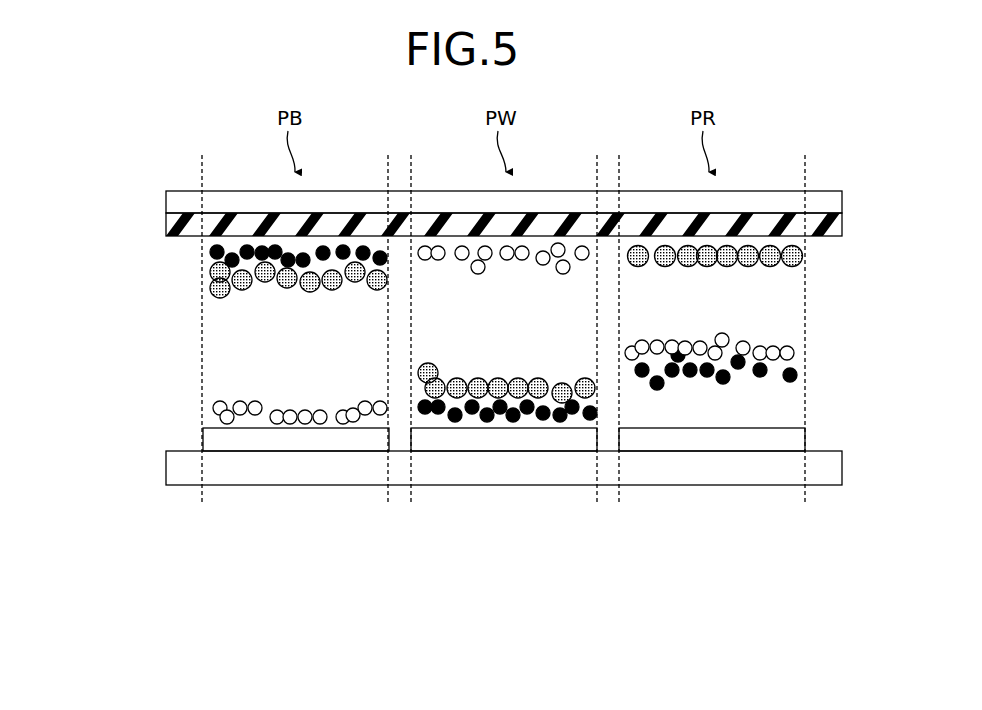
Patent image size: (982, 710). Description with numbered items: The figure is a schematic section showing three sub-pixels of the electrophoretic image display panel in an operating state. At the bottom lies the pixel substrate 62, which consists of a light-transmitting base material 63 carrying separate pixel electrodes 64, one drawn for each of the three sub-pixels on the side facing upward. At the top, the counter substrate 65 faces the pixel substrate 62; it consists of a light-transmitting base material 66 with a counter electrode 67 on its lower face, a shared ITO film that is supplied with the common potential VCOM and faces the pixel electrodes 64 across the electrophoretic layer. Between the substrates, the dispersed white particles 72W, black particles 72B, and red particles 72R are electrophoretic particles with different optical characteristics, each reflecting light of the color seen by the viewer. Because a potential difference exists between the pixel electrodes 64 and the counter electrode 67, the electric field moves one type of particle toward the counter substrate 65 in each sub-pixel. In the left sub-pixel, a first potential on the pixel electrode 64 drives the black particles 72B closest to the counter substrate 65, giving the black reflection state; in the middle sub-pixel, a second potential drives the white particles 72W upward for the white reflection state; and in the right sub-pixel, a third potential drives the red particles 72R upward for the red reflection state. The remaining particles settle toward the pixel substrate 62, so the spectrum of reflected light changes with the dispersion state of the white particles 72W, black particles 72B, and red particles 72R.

The pixel substrate 62 is at (97, 420).
The base material 63 is at (166, 466).
The pixel electrodes 64 is at (203, 432).
The counter substrate 65 is at (97, 180).
The base material 66 is at (166, 201).
The counter electrode 67 is at (166, 228).
The black particles 72B is at (212, 253).
The red particles 72R is at (214, 278).
The white particles 72W is at (214, 405).